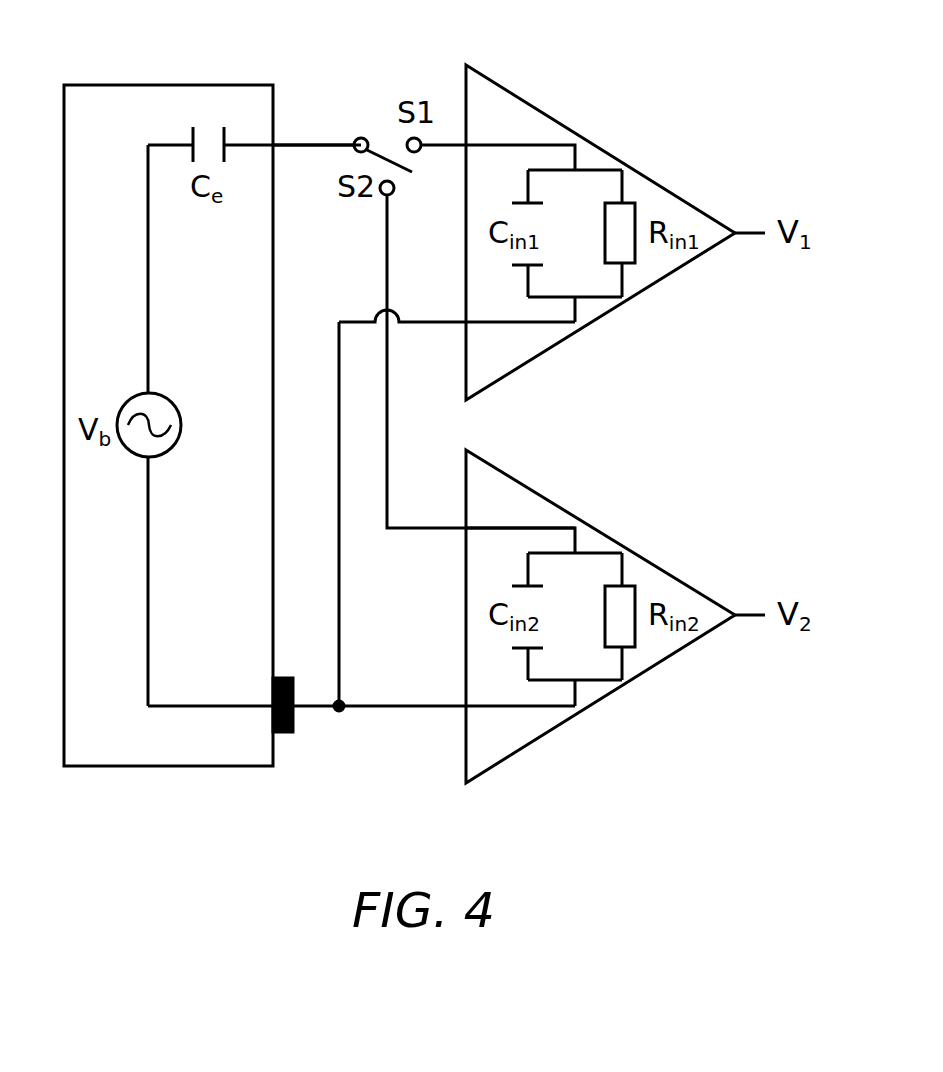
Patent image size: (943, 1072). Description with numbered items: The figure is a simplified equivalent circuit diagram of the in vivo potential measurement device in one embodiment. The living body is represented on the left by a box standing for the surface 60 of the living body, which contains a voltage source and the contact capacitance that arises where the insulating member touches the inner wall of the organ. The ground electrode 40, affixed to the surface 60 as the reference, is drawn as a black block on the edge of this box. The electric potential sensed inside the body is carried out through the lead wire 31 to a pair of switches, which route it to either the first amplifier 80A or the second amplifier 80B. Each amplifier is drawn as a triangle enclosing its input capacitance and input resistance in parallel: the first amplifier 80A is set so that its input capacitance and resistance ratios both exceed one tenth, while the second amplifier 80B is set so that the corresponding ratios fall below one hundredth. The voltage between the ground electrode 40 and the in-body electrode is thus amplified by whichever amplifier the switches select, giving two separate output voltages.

The surface of the living body 60 is at (102, 85).
The lead wire 31 is at (311, 145).
The ground electrode 40 is at (283, 735).
The first amplifier 80A is at (567, 128).
The second amplifier 80B is at (597, 528).